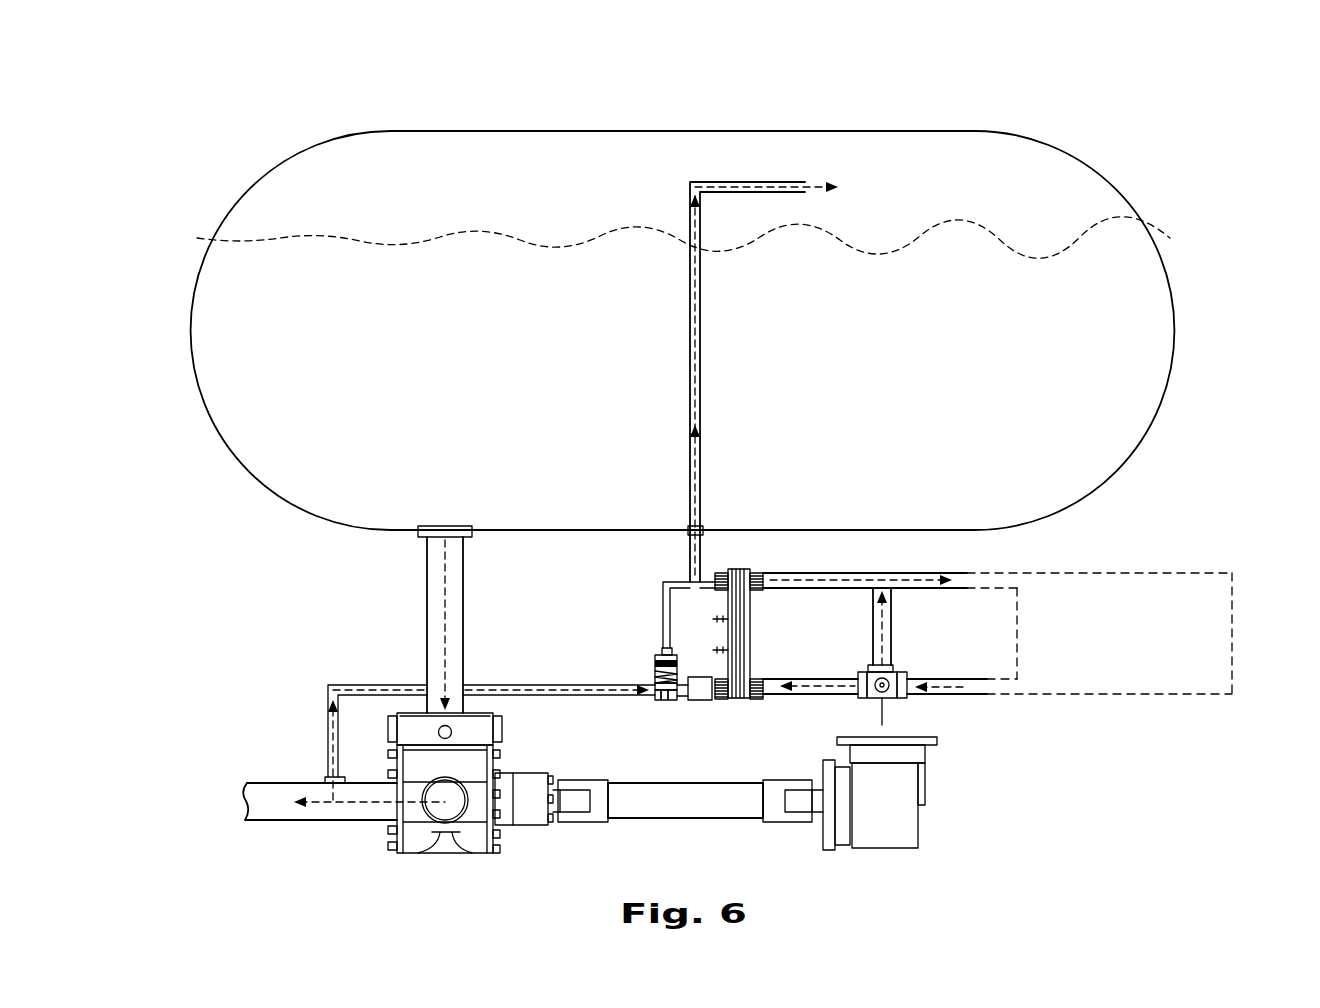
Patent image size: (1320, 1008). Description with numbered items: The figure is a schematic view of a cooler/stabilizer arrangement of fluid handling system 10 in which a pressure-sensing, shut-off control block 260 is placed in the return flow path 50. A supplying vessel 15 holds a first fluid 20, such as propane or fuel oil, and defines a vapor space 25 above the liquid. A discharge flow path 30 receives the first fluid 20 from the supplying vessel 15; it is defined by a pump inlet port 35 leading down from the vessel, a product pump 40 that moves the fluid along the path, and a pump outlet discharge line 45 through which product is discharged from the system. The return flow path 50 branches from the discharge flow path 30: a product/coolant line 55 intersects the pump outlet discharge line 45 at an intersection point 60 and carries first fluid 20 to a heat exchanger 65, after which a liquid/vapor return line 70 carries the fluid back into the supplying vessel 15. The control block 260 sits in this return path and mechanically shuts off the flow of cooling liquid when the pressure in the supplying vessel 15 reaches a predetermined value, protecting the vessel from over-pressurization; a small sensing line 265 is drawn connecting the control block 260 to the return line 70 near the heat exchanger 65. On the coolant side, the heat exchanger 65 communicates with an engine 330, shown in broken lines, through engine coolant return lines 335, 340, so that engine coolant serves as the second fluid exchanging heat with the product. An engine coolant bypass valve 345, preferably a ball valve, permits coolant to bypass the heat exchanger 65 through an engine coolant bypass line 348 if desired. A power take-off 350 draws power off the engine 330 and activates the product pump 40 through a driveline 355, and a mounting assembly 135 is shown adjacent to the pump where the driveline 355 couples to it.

The fluid handling system 10 is at (266, 100).
The supplying vessel 15 is at (284, 166).
The first fluid 20 is at (478, 262).
The vapor space 25 is at (1062, 175).
The discharge flow path 30 is at (452, 628).
The pump inlet port 35 is at (436, 603).
The product pump 40 is at (416, 838).
The pump outlet discharge line 45 is at (271, 790).
The return flow path 50 is at (700, 297).
The product/coolant line 55 is at (326, 688).
The intersection point 60 is at (340, 778).
The heat exchanger 65 is at (736, 628).
The liquid/vapor return line 70 is at (690, 341).
The hydraulic motor mounting assembly 135 is at (525, 812).
The pressure-sensing, shut-off control block 260 is at (660, 652).
The pilot line 265 is at (672, 580).
The engine 330 is at (1234, 660).
The engine coolant return line 335 is at (828, 575).
The engine coolant return line 340 is at (808, 688).
The engine coolant bypass valve 345 is at (890, 695).
The engine coolant bypass line 348 is at (888, 628).
The power take-off 350 is at (885, 835).
The driveline 355 is at (690, 805).